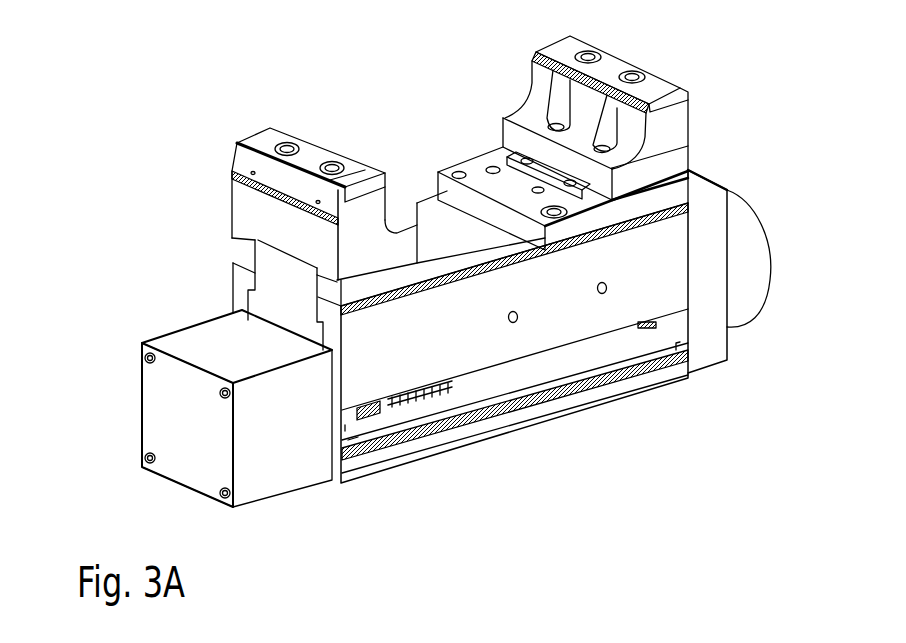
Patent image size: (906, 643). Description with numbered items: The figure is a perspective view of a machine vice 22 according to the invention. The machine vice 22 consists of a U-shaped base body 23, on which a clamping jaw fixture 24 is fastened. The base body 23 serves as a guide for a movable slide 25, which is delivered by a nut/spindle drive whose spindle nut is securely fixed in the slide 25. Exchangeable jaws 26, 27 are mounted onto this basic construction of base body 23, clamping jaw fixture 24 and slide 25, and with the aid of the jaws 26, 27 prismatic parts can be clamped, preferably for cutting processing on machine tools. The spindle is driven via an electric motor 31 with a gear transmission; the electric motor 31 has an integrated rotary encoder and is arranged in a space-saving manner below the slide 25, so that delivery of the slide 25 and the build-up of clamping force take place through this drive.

The machine vice 22 is at (198, 108).
The base body 23 is at (457, 345).
The clamping jaw fixture 24 is at (447, 188).
The slide 25 is at (288, 310).
The exchangeable jaw 26 is at (245, 203).
The exchangeable jaw 27 is at (668, 143).
The electric motor 31 is at (153, 407).